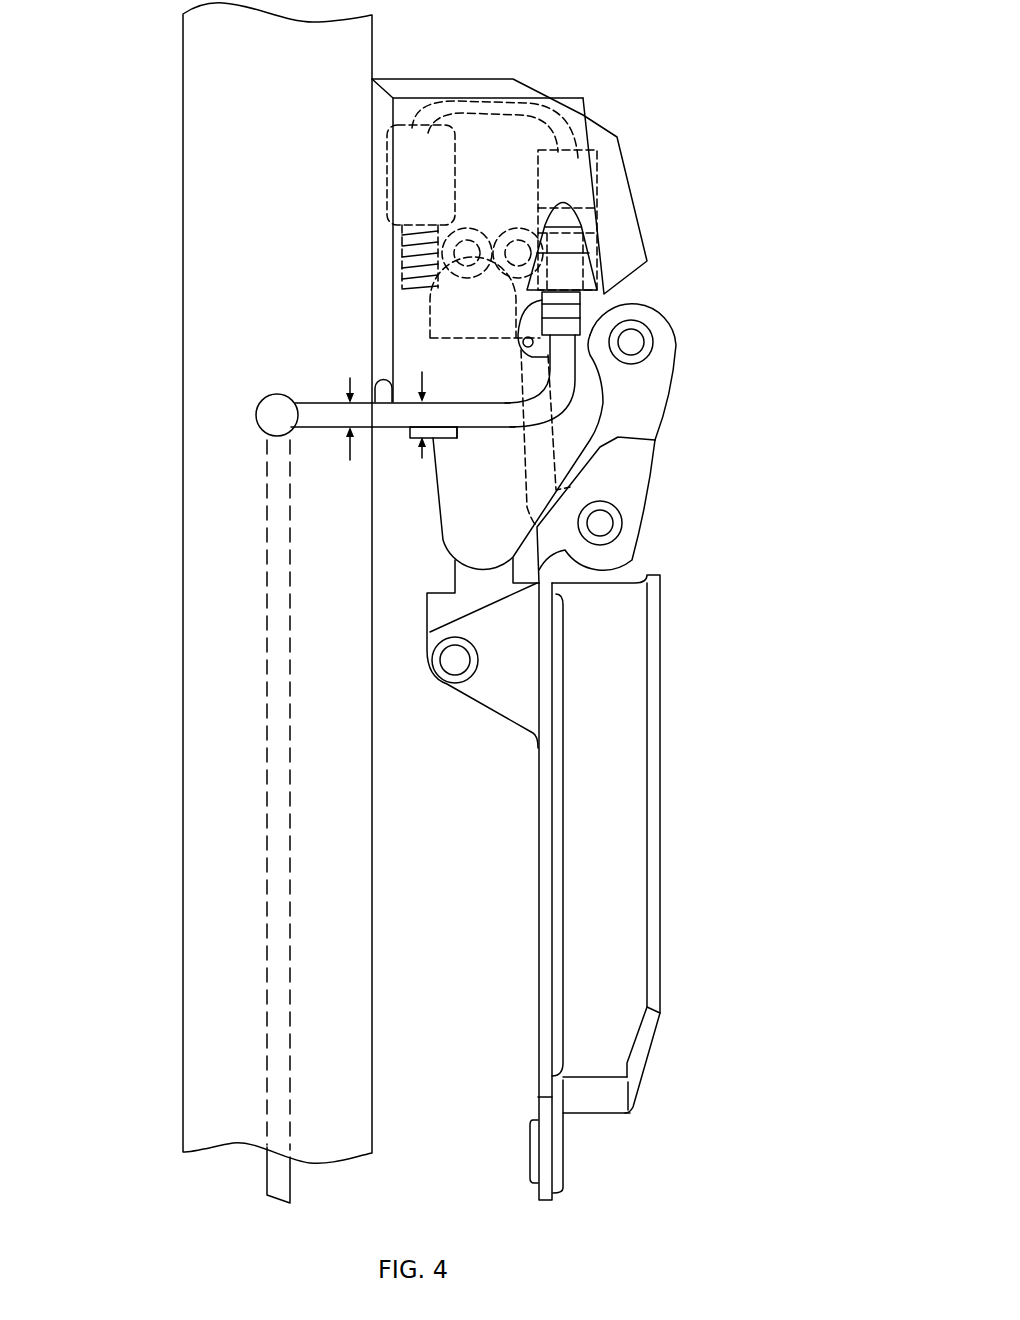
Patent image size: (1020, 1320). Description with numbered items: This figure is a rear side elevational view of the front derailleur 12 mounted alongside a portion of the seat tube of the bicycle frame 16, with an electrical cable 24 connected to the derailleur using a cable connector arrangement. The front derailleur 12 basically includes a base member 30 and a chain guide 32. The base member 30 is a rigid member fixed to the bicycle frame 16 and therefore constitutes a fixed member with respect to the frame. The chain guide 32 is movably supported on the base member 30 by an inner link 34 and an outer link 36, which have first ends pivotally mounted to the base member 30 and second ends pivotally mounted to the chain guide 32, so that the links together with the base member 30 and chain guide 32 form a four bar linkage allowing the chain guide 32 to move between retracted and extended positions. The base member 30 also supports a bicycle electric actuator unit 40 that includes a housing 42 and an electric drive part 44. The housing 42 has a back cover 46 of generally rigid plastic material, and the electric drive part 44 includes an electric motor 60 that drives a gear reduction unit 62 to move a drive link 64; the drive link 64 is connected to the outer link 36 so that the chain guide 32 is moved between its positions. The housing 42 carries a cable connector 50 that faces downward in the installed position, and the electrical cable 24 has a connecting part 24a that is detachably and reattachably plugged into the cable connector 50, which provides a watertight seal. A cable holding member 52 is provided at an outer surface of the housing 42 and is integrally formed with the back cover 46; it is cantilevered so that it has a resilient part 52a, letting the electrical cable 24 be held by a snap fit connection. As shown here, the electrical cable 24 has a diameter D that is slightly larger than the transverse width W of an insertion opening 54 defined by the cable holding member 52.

The front derailleur 12 is at (630, 55).
The bicycle frame 16 is at (181, 103).
The electrical cable 24 is at (320, 402).
The connecting part 24a is at (570, 363).
The base member 30 is at (684, 331).
The chain guide 32 is at (667, 692).
The inner link 34 is at (455, 578).
The outer link 36 is at (650, 477).
The bicycle electric actuator unit 40 is at (298, 259).
The housing 42 is at (366, 274).
The electric drive part 44 is at (410, 305).
The back cover 46 is at (471, 137).
The cable connector 50 is at (600, 205).
The cable holding member 52 is at (409, 444).
The resilient part 52a is at (447, 442).
The insertion opening 54 is at (446, 408).
The electric motor 60 is at (387, 153).
The gear reduction unit 62 is at (492, 210).
The drive link 64 is at (555, 425).
The transverse width W is at (425, 410).
The diameter D is at (350, 417).